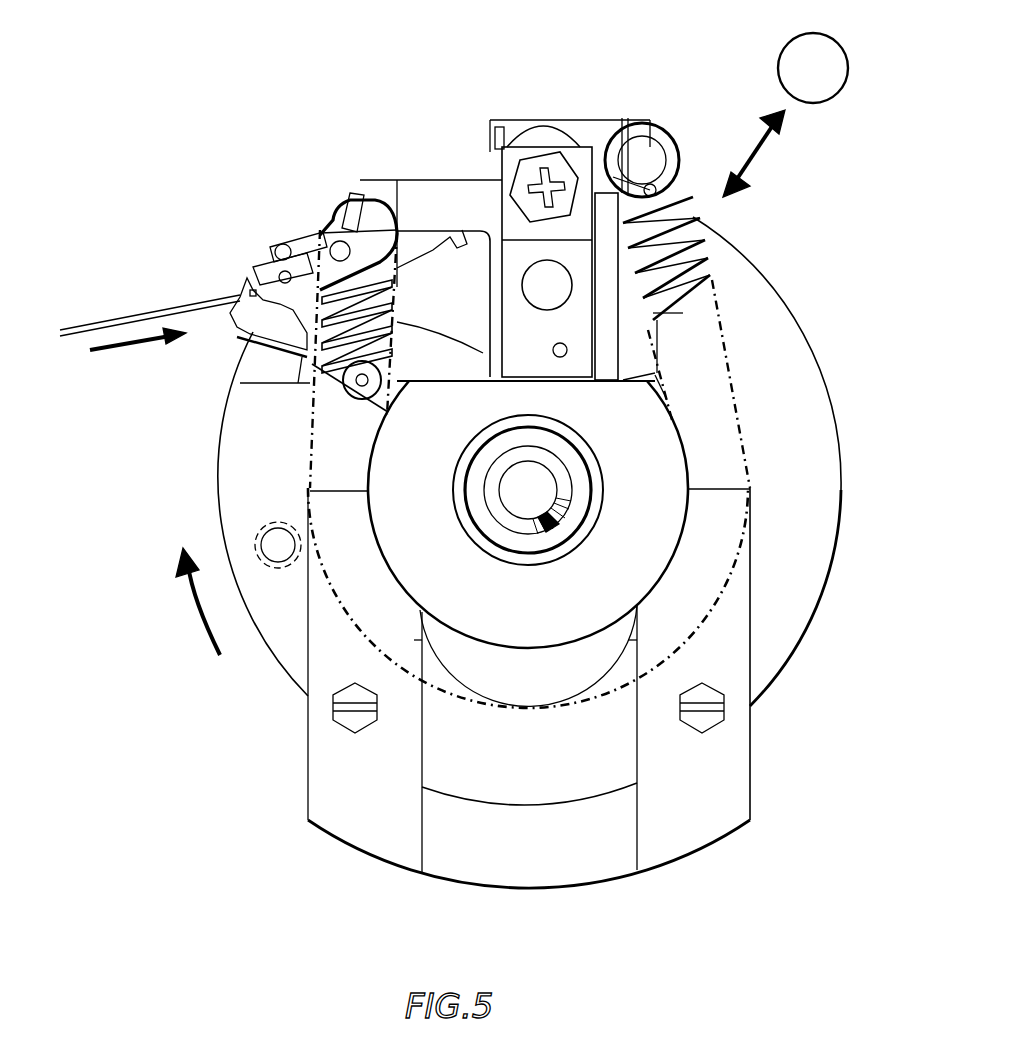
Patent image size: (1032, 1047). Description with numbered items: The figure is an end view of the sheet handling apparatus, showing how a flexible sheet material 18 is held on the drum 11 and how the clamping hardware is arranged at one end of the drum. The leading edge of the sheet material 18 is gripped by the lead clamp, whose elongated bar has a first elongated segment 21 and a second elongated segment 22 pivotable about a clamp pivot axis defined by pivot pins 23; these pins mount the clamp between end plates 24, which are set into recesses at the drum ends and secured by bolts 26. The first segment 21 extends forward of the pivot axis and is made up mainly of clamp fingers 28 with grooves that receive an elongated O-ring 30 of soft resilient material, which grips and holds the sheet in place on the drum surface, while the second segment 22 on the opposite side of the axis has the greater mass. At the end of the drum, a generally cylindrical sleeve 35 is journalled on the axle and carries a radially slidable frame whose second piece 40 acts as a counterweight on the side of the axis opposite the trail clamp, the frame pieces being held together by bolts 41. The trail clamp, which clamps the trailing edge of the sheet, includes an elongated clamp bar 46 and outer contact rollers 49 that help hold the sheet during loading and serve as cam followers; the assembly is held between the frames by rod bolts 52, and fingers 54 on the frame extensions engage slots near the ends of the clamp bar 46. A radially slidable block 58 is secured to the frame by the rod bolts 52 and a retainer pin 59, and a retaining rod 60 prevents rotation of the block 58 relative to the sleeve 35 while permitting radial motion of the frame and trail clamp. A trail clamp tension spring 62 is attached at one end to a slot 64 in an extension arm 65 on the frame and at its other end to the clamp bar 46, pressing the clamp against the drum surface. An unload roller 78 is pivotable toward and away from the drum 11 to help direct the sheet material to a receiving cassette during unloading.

The drum 11 is at (215, 460).
The flexible sheet material 18 is at (140, 310).
The first elongated segment 21 is at (302, 233).
The second elongated segment 22 is at (333, 205).
The pivot pins 23 is at (323, 210).
The end plates 24 is at (243, 296).
The bolts 26 is at (342, 390).
The clamp fingers 28 is at (250, 278).
The O-ring 30 is at (265, 245).
The cylindrical sleeves 35 is at (672, 570).
The second piece of frame 40 is at (668, 862).
The bolts 41 is at (333, 705).
The clamp bar 46 is at (516, 123).
The outer contact rollers 49 is at (538, 126).
The rod bolts 52 is at (583, 165).
The fingers 54 is at (640, 118).
The radially slidable blocks 58 is at (495, 182).
The retainer pins 59 is at (568, 352).
The retaining rods 60 is at (700, 348).
The trail clamp tension springs 62 is at (307, 383).
The slots 64 is at (362, 190).
The extension arms 65 is at (395, 180).
The unload rollers 78 is at (792, 42).